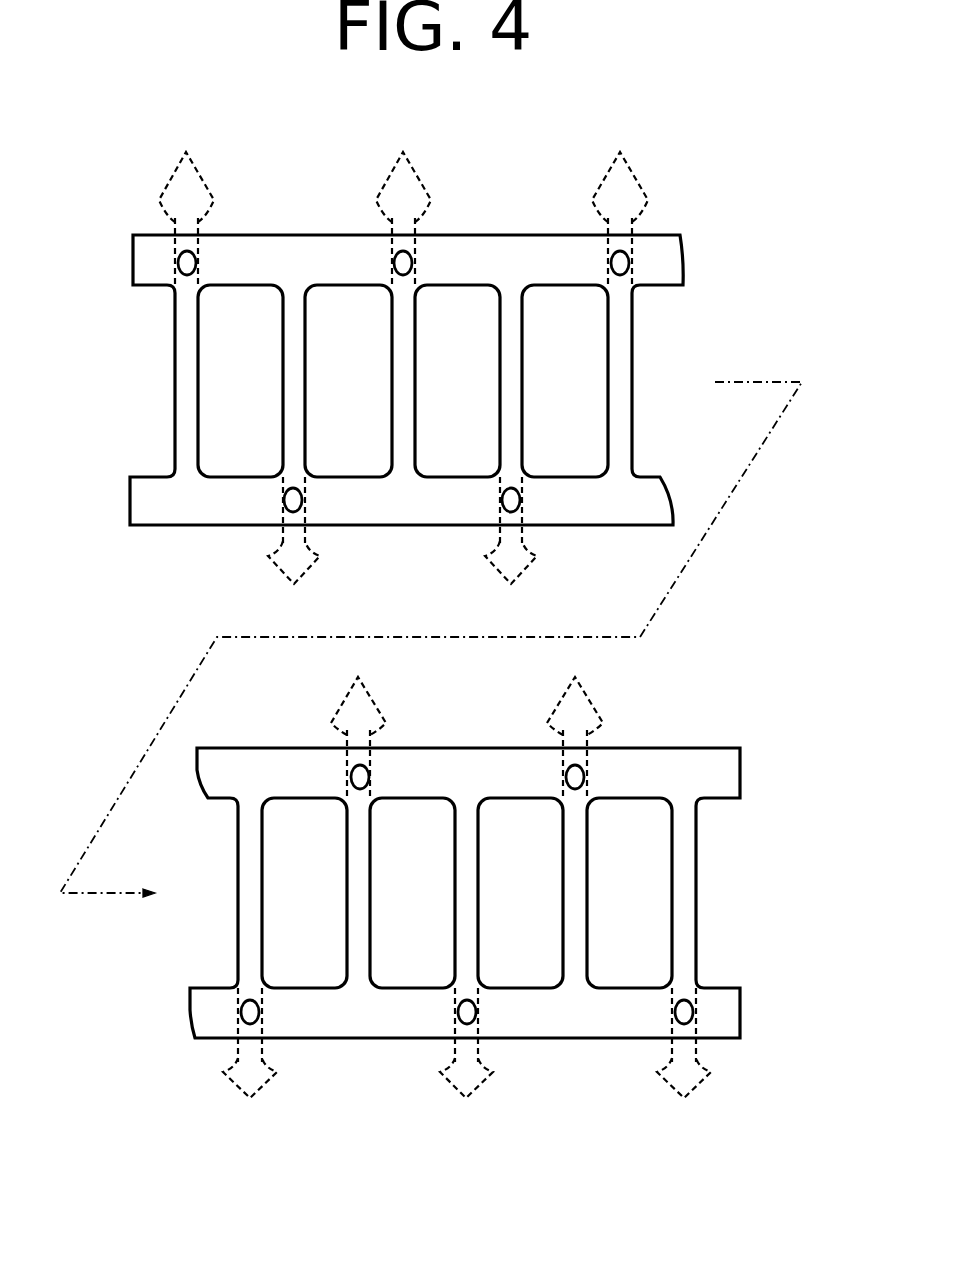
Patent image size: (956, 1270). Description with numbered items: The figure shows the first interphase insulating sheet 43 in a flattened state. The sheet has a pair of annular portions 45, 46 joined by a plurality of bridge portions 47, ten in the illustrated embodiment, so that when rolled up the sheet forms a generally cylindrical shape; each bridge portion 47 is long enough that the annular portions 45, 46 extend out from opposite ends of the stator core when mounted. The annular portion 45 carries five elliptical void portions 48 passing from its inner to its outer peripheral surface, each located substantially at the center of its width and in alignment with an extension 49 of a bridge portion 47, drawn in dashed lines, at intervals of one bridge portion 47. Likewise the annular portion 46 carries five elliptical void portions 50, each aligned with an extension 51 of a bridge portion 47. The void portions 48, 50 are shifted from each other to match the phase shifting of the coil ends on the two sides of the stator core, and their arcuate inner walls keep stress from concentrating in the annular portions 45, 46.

The first interphase insulating sheet 43 is at (513, 201).
The annular portion 45 is at (298, 247).
The annular portion 46 is at (208, 514).
The bridge portion 47 is at (288, 371).
The void portion 48 is at (190, 263).
The extension of the bridge portion 49 is at (403, 460).
The void portion 50 is at (297, 500).
The extension of the bridge portion 51 is at (467, 803).